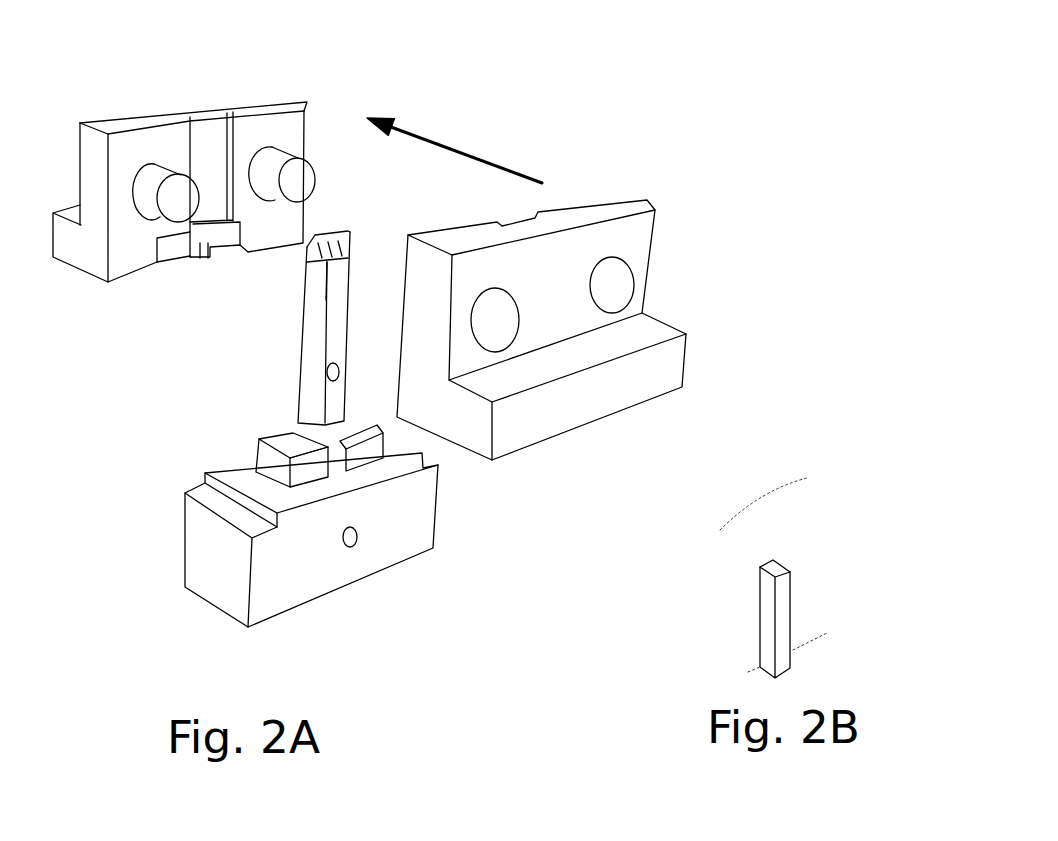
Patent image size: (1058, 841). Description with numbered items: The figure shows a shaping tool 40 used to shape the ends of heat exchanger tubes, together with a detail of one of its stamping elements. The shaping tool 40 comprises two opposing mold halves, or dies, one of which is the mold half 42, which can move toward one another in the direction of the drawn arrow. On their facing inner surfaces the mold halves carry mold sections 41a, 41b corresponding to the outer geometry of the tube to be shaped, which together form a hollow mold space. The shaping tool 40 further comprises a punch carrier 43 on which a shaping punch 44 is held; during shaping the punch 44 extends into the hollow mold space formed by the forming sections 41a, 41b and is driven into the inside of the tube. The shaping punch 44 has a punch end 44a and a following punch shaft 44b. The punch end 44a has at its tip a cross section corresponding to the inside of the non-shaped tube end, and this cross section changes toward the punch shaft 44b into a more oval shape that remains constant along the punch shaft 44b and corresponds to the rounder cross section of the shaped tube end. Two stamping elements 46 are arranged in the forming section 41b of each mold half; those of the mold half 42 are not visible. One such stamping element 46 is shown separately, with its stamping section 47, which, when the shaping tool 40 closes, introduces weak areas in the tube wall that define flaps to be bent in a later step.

In FIG. 2A, the shaping tool 40 is at (142, 455).
In FIG. 2A, the mold section 41a is at (219, 143).
In FIG. 2A, the mold section 41b is at (205, 222).
In FIG. 2B, the mold section 41b is at (810, 513).
In FIG. 2A, the mold half 42 is at (577, 411).
In FIG. 2A, the punch carrier 43 is at (390, 555).
In FIG. 2A, the shaping punch 44 is at (298, 390).
In FIG. 2A, the punch end 44a is at (310, 268).
In FIG. 2A, the punch shaft 44b is at (313, 337).
In FIG. 2A, the stamping element 46 is at (193, 257).
In FIG. 2B, the stamping element 46 is at (760, 613).
In FIG. 2B, the stamping section 47 is at (788, 630).